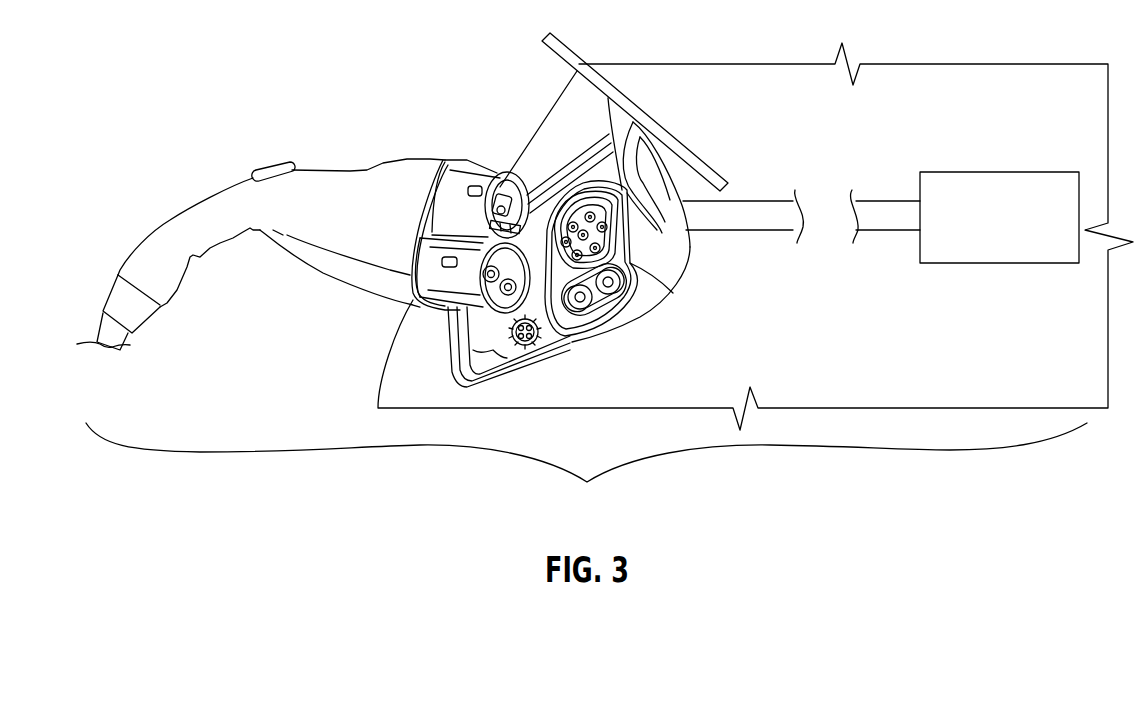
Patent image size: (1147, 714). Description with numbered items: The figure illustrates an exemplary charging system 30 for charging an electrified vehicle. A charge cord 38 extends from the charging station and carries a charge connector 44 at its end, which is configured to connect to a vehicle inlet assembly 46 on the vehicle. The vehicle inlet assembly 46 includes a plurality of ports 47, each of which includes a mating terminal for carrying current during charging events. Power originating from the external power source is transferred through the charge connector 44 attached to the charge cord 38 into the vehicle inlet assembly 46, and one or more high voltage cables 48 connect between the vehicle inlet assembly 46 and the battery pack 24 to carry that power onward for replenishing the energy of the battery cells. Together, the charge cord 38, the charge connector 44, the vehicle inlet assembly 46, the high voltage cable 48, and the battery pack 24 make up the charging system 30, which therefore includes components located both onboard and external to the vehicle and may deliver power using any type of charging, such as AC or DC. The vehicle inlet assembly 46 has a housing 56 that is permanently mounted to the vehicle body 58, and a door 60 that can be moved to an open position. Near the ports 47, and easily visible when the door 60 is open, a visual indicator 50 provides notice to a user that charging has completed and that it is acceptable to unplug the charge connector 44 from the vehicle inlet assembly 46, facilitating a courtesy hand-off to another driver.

The battery pack 24 is at (1008, 172).
The charging system 30 is at (586, 472).
The charge cord 38 is at (97, 333).
The charge connector 44 is at (357, 178).
The vehicle inlet assembly 46 is at (645, 300).
The ports 47 is at (509, 180).
The high voltage cable 48 is at (762, 200).
The visual indicator 50 is at (527, 347).
The housing 56 is at (645, 236).
The vehicle body 58 is at (806, 348).
The door 60 is at (578, 64).